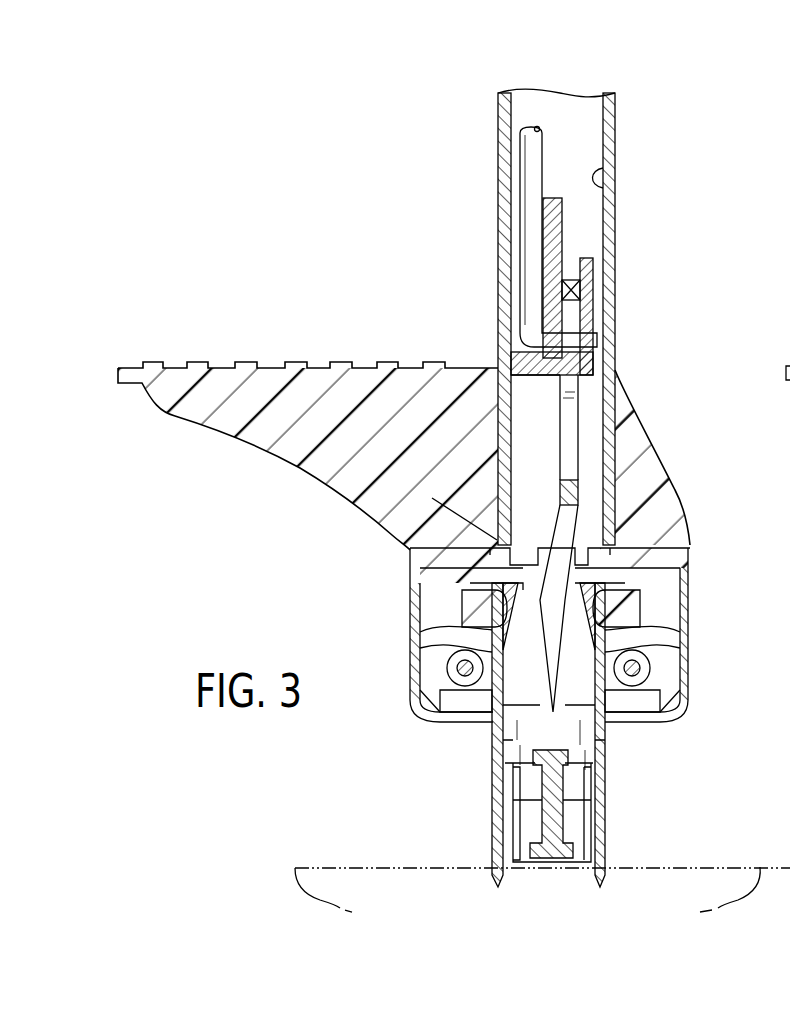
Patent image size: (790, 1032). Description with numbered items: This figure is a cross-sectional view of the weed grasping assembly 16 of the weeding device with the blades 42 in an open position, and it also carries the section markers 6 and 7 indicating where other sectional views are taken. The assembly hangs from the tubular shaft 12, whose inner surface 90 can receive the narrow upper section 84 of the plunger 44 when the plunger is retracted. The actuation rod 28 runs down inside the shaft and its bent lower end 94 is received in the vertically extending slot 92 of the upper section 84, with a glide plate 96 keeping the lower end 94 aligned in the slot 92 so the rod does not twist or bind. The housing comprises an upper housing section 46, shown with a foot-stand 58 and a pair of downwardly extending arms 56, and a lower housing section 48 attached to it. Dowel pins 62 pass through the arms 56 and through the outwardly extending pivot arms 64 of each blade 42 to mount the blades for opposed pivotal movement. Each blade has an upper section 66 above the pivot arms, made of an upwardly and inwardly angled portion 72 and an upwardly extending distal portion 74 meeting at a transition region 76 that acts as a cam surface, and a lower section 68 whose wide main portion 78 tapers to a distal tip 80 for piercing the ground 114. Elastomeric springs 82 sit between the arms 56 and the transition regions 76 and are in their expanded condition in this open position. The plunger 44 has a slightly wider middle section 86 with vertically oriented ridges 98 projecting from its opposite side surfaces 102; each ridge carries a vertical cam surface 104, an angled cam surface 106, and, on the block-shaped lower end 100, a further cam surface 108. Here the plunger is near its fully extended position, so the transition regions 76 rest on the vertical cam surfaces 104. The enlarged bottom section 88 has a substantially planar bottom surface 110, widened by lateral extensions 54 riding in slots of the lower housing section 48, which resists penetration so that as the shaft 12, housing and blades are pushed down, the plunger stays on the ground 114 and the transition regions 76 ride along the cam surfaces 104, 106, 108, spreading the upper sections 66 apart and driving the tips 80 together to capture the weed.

The section line 6- 6 is at (468, 342).
The section line 7- 7 is at (386, 547).
The tubular shaft 12 is at (615, 140).
The weed grasping assembly 16 is at (669, 467).
The actuation rod 28 is at (545, 168).
The blades 42 is at (495, 808).
The plunger 44 is at (598, 795).
The upper housing section 46 is at (665, 505).
The lower housing section 48 is at (688, 700).
The lateral extensions 54 is at (513, 793).
The downwardly extending arms 56 is at (412, 672).
The foot-stand 58 is at (202, 363).
The dowel pins 62 is at (420, 697).
The pivot arms 64 is at (475, 712).
The upper section 66 is at (360, 565).
The lower section 68 is at (413, 835).
The upwardly and inwardly angled extending portion 72 is at (450, 630).
The upwardly extending distal portion 74 is at (420, 578).
The transition region 76 is at (551, 726).
The main portion 78 is at (490, 855).
The distal tip 80 is at (497, 886).
The elastomeric springs 82 is at (462, 603).
The upper section 84 is at (540, 405).
The middle section 86 is at (447, 516).
The enlarged bottom section 88 is at (492, 832).
The inner surface 90 is at (603, 188).
The slot 92 is at (583, 433).
The bent lower end 94 is at (595, 332).
The glide plate 96 is at (593, 275).
The vertically oriented ridges 98 is at (562, 560).
The block-shaped lower end 100 is at (605, 760).
The side surfaces 102 is at (490, 555).
The vertical cam surface 104 is at (420, 652).
The angled cam surface 106 is at (442, 712).
The cam surface 108 is at (503, 758).
The planar bottom surface 110 is at (553, 862).
The ground 114 is at (330, 868).